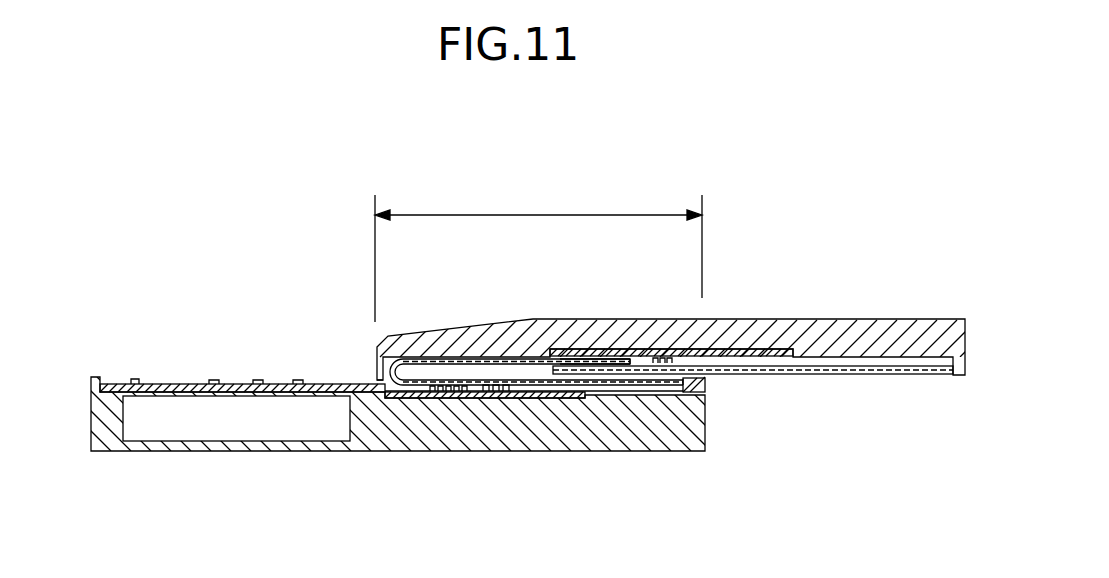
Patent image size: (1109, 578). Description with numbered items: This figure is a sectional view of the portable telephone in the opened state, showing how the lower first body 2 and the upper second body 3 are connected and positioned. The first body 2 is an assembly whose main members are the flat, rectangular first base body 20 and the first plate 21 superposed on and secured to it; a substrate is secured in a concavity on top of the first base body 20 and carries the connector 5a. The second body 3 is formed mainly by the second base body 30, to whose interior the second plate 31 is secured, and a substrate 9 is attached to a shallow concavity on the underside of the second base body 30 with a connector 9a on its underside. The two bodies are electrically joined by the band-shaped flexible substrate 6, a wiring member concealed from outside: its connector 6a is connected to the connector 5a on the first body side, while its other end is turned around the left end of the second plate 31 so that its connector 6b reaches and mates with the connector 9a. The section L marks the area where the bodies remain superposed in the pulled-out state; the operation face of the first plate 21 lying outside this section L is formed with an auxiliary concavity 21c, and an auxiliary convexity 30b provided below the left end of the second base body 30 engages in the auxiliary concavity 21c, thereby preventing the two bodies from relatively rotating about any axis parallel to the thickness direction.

The first body 2 is at (405, 434).
The second body 3 is at (603, 325).
The connector 5a is at (530, 410).
The flexible substrate 6 is at (377, 368).
The connector 6a is at (440, 392).
The connector 6b is at (595, 361).
The substrate 9 is at (772, 348).
The connector 9a is at (597, 357).
The first base body 20 is at (652, 442).
The first plate 21 is at (700, 390).
The auxiliary concavity 21c is at (133, 382).
The second base body 30 is at (910, 330).
The auxiliary convexity 30b is at (372, 372).
The second plate 31 is at (885, 375).
The section L is at (538, 245).